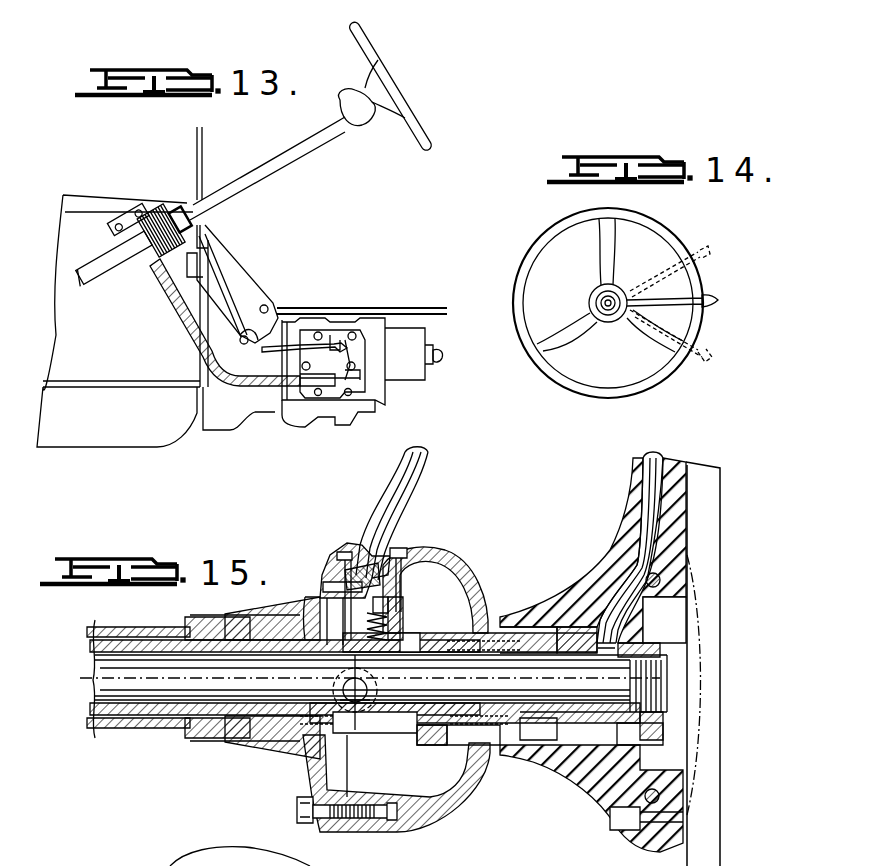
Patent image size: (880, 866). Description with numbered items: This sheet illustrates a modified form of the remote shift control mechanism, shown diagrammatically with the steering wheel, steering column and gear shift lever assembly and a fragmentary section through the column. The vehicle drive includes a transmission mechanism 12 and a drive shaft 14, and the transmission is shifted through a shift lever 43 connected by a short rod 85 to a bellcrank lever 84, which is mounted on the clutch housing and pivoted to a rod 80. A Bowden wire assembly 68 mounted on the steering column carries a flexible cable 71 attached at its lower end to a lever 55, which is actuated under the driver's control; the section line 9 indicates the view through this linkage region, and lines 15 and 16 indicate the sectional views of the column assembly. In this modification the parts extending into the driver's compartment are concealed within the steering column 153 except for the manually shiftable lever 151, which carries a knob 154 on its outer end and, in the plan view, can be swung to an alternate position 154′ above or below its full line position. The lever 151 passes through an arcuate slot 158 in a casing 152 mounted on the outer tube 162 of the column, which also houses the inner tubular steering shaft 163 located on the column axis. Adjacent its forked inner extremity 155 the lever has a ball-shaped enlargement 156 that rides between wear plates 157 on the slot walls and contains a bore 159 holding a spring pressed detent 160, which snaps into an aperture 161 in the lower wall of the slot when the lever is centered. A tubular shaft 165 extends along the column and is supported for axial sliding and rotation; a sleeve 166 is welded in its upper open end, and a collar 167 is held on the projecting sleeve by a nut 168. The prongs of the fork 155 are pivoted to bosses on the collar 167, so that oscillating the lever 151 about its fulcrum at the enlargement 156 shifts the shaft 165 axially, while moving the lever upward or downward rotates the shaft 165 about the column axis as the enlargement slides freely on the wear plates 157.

In FIG. 13, the section line 9- 9 is at (335, 438).
In FIG. 13, the transmission mechanism 12 is at (370, 310).
In FIG. 13, the drive shaft 14 is at (402, 16).
In FIG. 13, the section line 15- 15 is at (383, 28).
In FIG. 15, the section line 16- 16 is at (78, 702).
In FIG. 13, the shift lever 43 is at (332, 364).
In FIG. 13, the lever 55 is at (383, 352).
In FIG. 13, the Bowden wire assembly 68 is at (165, 312).
In FIG. 13, the flexible cable 71 is at (328, 413).
In FIG. 13, the rod 80 is at (224, 322).
In FIG. 13, the bellcrank lever 84 is at (272, 305).
In FIG. 13, the short rod 85 is at (278, 357).
In FIG. 14, the manually shiftable lever 151 is at (680, 300).
In FIG. 15, the manually shiftable lever 151 is at (425, 470).
In FIG. 13, the casing 152 is at (350, 132).
In FIG. 15, the casing 152 is at (458, 585).
In FIG. 13, the steering column 153 is at (240, 182).
In FIG. 15, the steering column 153 is at (152, 738).
In FIG. 14, the knob 154 is at (722, 312).
In FIG. 14, the control shaft alternate position 154′ is at (715, 254).
In FIG. 15, the forked inner extremity 155 is at (390, 618).
In FIG. 15, the ball-shaped enlargement 156 is at (385, 540).
In FIG. 15, the wear plates 157 is at (408, 565).
In FIG. 15, the arcuate slot 158 is at (350, 540).
In FIG. 15, the bore 159 is at (318, 598).
In FIG. 15, the spring pressed detent 160 is at (325, 572).
In FIG. 15, the aperture 161 is at (345, 575).
In FIG. 15, the outer tube 162 is at (218, 745).
In FIG. 15, the inner tubular steering shaft 163 is at (290, 700).
In FIG. 15, the tubular shaft 165 is at (168, 640).
In FIG. 15, the sleeve 166 is at (385, 730).
In FIG. 15, the collar 167 is at (410, 735).
In FIG. 15, the nut 168 is at (381, 692).